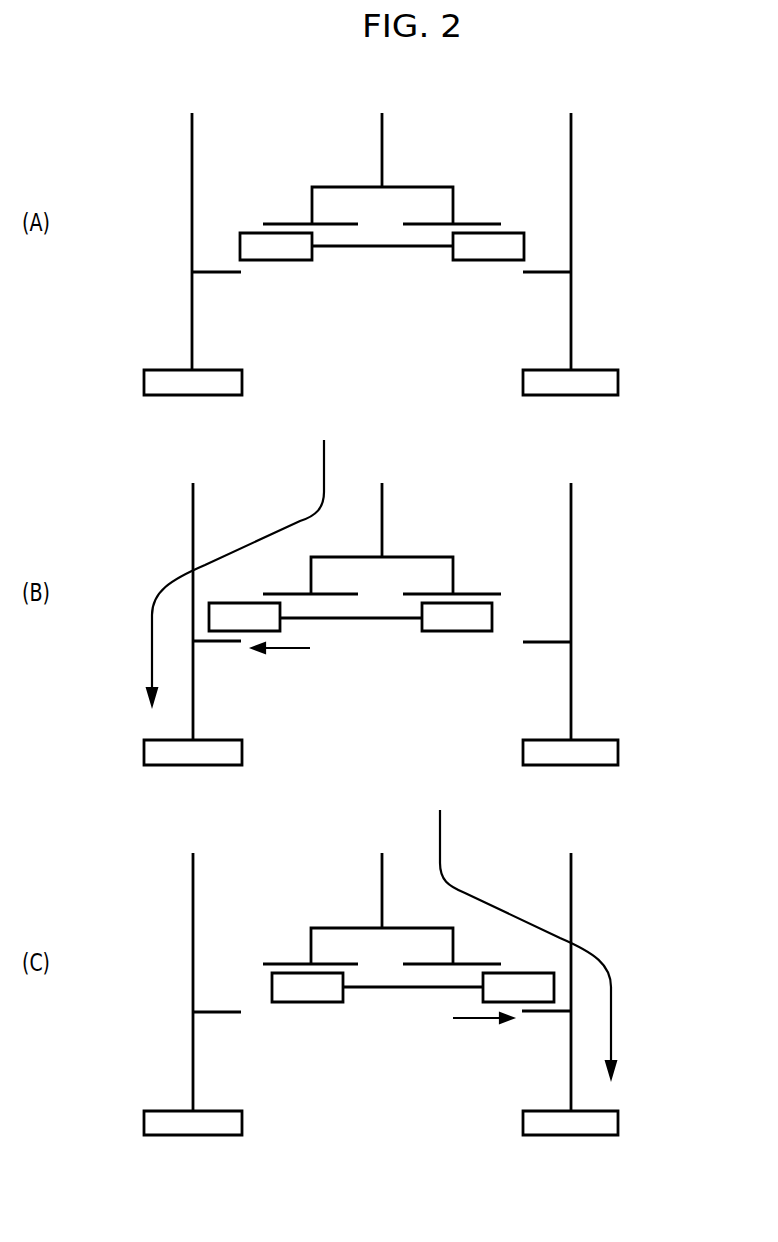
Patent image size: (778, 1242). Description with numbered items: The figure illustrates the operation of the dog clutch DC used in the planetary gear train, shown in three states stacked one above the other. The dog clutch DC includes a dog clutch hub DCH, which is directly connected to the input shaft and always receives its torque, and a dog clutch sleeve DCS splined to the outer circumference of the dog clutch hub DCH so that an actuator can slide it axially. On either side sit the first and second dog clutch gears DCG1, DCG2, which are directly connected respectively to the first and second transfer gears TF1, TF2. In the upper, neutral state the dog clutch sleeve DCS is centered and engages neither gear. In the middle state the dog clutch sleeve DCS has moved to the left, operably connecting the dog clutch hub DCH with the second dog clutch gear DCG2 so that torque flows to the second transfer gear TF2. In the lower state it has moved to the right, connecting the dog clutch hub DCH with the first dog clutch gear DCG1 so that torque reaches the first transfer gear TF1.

The dog clutch DC is at (290, 122).
The dog clutch hub DCH is at (382, 150).
The dog clutch sleeve DCS is at (382, 250).
The first dog clutch gear DCG1 is at (548, 273).
The second dog clutch gear DCG2 is at (213, 273).
The first transfer gear TF1 is at (612, 382).
The second transfer gear TF2 is at (150, 382).